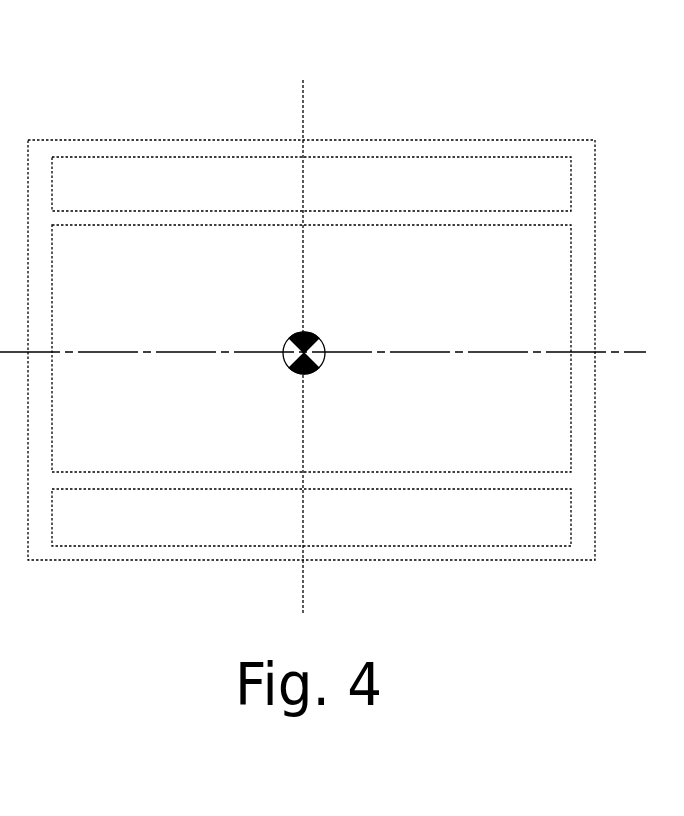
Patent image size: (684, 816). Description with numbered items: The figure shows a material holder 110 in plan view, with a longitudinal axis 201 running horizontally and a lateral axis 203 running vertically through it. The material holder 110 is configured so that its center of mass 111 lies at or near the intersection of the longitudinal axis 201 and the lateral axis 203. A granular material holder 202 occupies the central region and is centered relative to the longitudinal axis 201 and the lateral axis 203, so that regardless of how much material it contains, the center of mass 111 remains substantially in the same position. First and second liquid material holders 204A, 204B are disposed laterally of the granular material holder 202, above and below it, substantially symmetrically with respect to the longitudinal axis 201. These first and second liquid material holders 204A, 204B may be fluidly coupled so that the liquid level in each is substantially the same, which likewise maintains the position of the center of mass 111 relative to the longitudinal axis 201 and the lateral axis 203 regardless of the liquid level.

The material holder 110 is at (385, 90).
The center of mass 111 is at (323, 363).
The longitudinal axis 201 is at (614, 352).
The granular material holder 202 is at (571, 245).
The lateral axis 203 is at (303, 120).
The first liquid material holder 204A is at (571, 180).
The second liquid material holder 204B is at (571, 515).